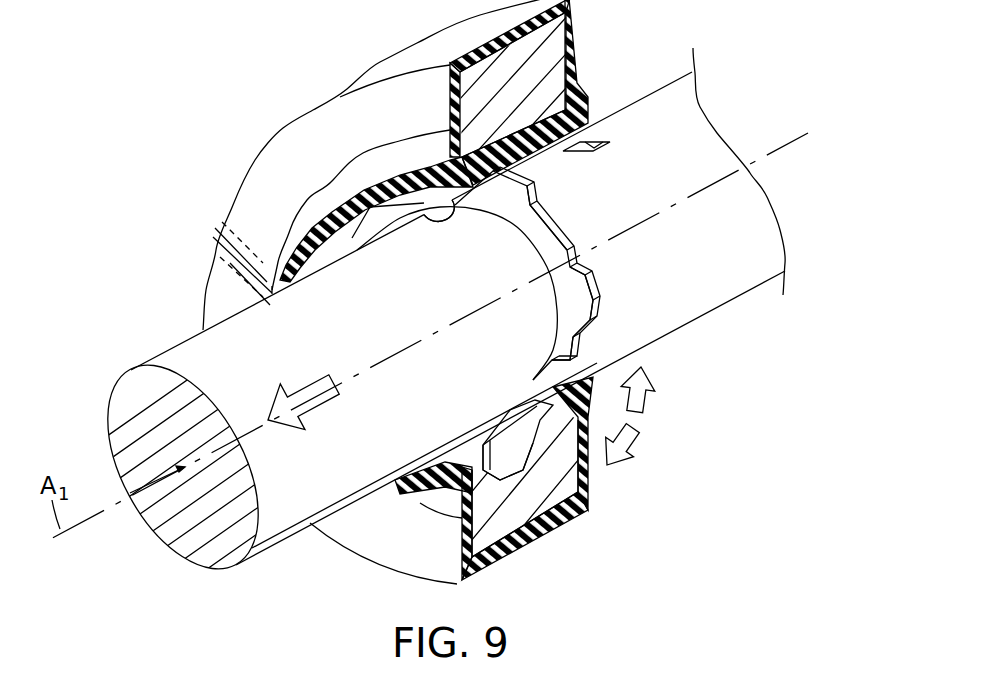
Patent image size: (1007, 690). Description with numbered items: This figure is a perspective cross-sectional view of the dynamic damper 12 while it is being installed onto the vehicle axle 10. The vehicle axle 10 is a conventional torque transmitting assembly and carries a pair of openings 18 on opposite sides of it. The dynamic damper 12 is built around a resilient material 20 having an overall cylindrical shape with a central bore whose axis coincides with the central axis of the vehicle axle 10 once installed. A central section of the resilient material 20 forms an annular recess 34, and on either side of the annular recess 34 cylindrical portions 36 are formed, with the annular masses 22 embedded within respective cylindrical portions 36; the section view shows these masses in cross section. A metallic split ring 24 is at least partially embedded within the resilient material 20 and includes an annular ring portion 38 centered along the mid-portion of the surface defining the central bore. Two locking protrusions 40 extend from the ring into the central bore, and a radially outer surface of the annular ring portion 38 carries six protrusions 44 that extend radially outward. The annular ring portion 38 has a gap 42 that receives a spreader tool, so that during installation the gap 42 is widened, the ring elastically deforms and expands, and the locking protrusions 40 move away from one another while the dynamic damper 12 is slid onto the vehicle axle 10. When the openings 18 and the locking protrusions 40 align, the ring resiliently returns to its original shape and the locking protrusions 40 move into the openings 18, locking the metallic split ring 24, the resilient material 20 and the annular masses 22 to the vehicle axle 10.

The vehicle axle 10 is at (280, 547).
The dynamic damper 12 is at (414, 40).
The openings 18 is at (596, 141).
The resilient material 20 is at (515, 150).
The annular masses 22 is at (541, 65).
The metallic split ring 24 is at (610, 284).
The annular recess 34 is at (290, 173).
The cylindrical portions 36 is at (318, 100).
The annular ring portion 38 is at (540, 240).
The locking protrusions 40 is at (440, 222).
The gap 42 is at (567, 362).
The protrusions 44 is at (372, 209).